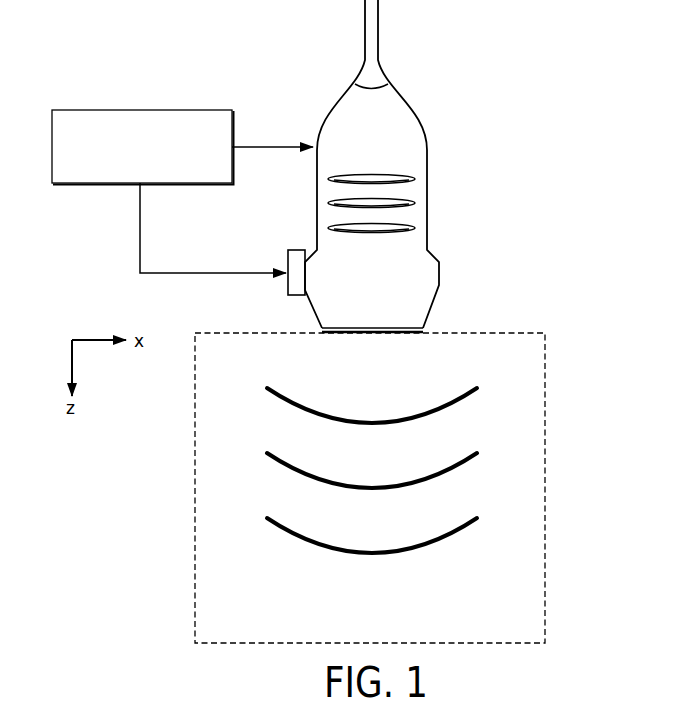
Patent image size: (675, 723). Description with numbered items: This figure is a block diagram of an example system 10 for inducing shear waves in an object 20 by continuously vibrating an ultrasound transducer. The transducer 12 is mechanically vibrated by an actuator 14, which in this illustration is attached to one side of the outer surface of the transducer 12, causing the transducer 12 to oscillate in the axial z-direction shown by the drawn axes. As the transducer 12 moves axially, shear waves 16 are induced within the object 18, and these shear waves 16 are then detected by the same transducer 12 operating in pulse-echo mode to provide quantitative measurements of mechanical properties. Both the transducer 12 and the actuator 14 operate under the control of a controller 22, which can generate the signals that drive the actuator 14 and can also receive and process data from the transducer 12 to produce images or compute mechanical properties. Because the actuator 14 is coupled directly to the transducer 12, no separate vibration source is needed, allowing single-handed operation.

The system 10 is at (209, 68).
The transducer 12 is at (428, 200).
The actuator 14 is at (297, 250).
The shear waves 16 is at (482, 394).
The object 18 is at (248, 637).
The object 20 is at (413, 336).
The controller 22 is at (140, 110).